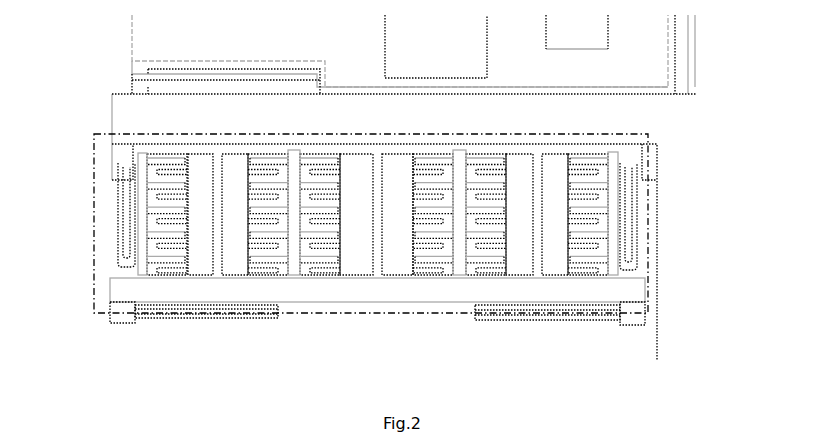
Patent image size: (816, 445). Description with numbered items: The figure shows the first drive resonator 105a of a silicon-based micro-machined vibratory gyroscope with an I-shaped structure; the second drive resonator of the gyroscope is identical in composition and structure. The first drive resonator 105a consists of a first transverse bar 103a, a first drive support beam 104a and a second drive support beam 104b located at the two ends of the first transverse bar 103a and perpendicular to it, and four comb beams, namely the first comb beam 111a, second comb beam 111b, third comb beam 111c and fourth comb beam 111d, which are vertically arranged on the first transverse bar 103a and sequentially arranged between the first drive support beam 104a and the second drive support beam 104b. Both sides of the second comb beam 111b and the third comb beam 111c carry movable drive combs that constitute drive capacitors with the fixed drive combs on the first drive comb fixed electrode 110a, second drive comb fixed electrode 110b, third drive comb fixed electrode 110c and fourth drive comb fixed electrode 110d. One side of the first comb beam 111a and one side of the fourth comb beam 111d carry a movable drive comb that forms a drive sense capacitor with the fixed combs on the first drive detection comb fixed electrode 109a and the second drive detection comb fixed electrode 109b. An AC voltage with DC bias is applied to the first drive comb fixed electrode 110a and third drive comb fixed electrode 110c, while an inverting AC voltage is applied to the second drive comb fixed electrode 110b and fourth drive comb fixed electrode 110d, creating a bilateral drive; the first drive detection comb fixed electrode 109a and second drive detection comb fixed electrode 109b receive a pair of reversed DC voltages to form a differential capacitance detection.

The first transverse bar 103a is at (160, 292).
The first drive support beam 104a is at (132, 215).
The second drive support beam 104b is at (628, 215).
The first drive resonator 105a is at (93, 195).
The first drive detection comb fixed electrode 109a is at (198, 263).
The second drive detection comb fixed electrode 109b is at (557, 267).
The first drive comb fixed electrode 110a is at (240, 263).
The second drive comb fixed electrode 110b is at (353, 260).
The third drive comb fixed electrode 110c is at (402, 267).
The fourth drive comb fixed electrode 110d is at (517, 267).
The first comb beam 111a is at (138, 255).
The second comb beam 111b is at (298, 252).
The third comb beam 111c is at (458, 265).
The fourth comb beam 111d is at (612, 265).